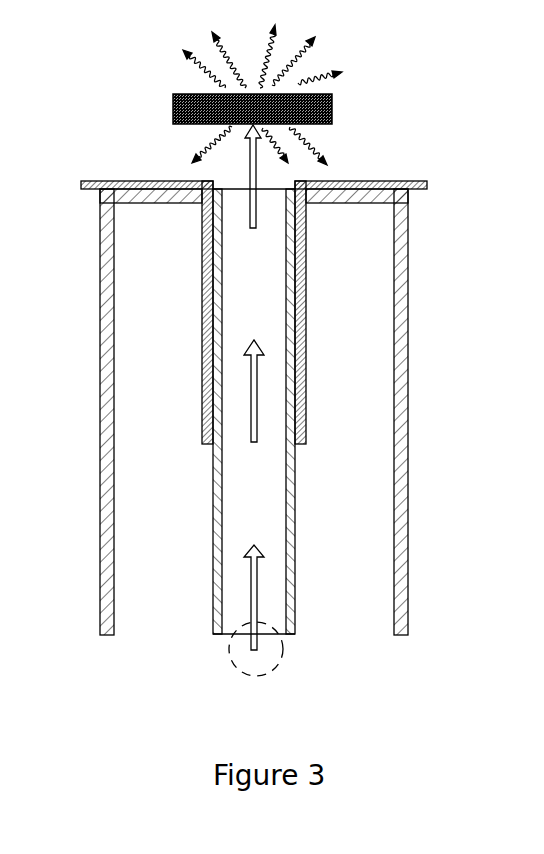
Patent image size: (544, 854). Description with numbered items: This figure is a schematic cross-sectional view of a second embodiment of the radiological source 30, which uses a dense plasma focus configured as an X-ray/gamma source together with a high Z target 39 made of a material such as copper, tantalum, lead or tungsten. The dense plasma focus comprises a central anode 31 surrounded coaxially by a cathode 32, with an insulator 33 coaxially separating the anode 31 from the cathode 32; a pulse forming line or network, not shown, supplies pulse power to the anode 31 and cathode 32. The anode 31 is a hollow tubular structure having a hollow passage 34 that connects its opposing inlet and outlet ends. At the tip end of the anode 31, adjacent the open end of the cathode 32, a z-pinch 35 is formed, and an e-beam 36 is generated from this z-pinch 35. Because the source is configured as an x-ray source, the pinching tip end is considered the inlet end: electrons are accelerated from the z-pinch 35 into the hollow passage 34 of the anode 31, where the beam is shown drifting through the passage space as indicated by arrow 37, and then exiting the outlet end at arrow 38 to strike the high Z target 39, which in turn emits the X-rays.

The radiological source 30 is at (425, 65).
The anode 31 is at (213, 520).
The cathode 32 is at (100, 428).
The insulator 33 is at (143, 181).
The hollow passage 34 is at (267, 508).
The z-pinch 35 is at (232, 637).
The e-beam 36 is at (258, 565).
The electron beam drifting through hollow passage 37 is at (257, 358).
The arrow at outlet end 38 is at (250, 142).
The high Z target 39 is at (320, 94).